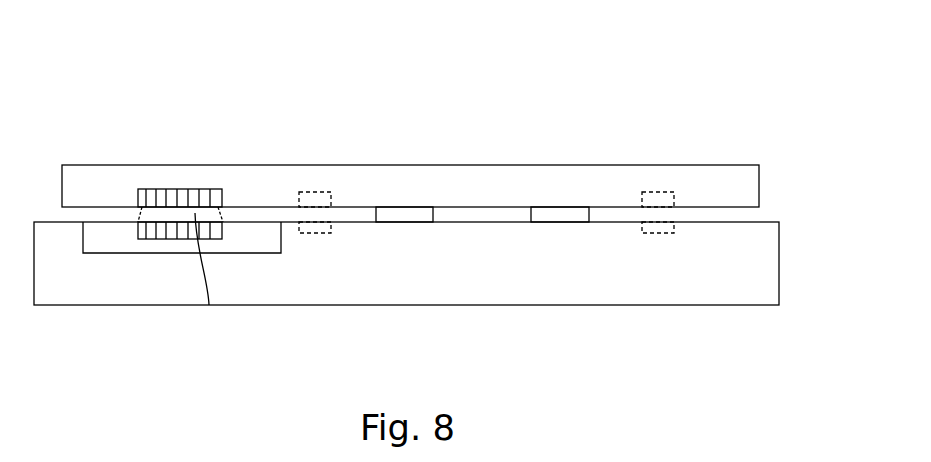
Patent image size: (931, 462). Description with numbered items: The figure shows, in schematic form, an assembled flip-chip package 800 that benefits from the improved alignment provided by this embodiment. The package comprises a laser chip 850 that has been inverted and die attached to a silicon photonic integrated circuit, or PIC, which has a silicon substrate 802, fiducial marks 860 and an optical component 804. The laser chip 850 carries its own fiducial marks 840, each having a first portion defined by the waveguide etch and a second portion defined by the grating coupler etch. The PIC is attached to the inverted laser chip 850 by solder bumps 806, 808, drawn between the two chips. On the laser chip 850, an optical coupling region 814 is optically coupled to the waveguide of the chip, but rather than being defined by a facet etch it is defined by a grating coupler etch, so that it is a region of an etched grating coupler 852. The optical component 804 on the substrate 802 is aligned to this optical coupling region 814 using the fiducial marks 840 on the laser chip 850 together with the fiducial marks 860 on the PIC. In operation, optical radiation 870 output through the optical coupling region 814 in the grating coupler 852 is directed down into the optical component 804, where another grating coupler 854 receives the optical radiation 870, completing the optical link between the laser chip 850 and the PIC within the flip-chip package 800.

The flip-chip package 800 is at (179, 81).
The silicon substrate 802 is at (404, 276).
The optical component 804 is at (145, 247).
The solder bump 806 is at (416, 213).
The solder bump 808 is at (562, 213).
The optical coupling region 814 is at (209, 305).
The fiducial mark 840 is at (322, 200).
The laser chip 850 is at (520, 196).
The grating coupler 852 is at (205, 203).
The grating coupler 854 is at (187, 229).
The fiducial mark 860 is at (316, 228).
The optical radiation 870 is at (185, 236).